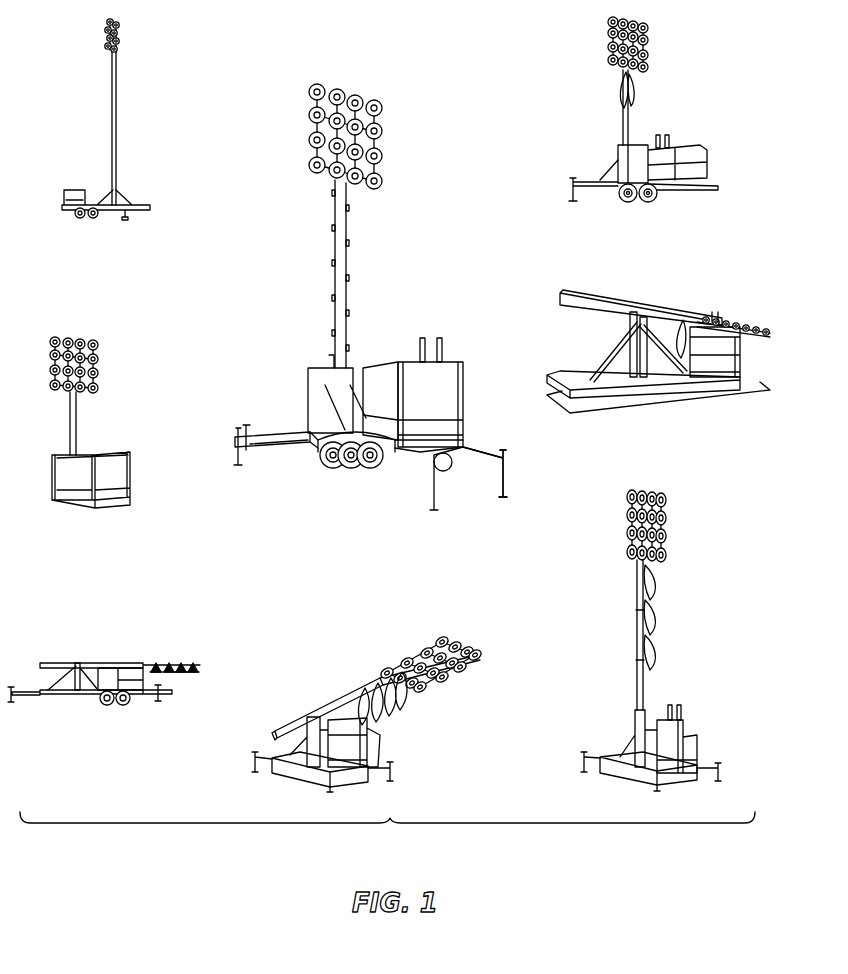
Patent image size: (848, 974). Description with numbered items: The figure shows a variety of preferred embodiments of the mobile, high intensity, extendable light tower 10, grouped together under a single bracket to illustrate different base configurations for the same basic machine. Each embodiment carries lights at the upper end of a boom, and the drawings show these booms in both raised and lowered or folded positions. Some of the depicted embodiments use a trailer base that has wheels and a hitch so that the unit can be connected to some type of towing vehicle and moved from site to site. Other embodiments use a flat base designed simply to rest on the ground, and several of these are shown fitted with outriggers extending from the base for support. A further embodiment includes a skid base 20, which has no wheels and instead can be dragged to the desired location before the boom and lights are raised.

The mobile, high intensity, extendable light tower 10 is at (387, 838).
The skid base 20 is at (668, 405).